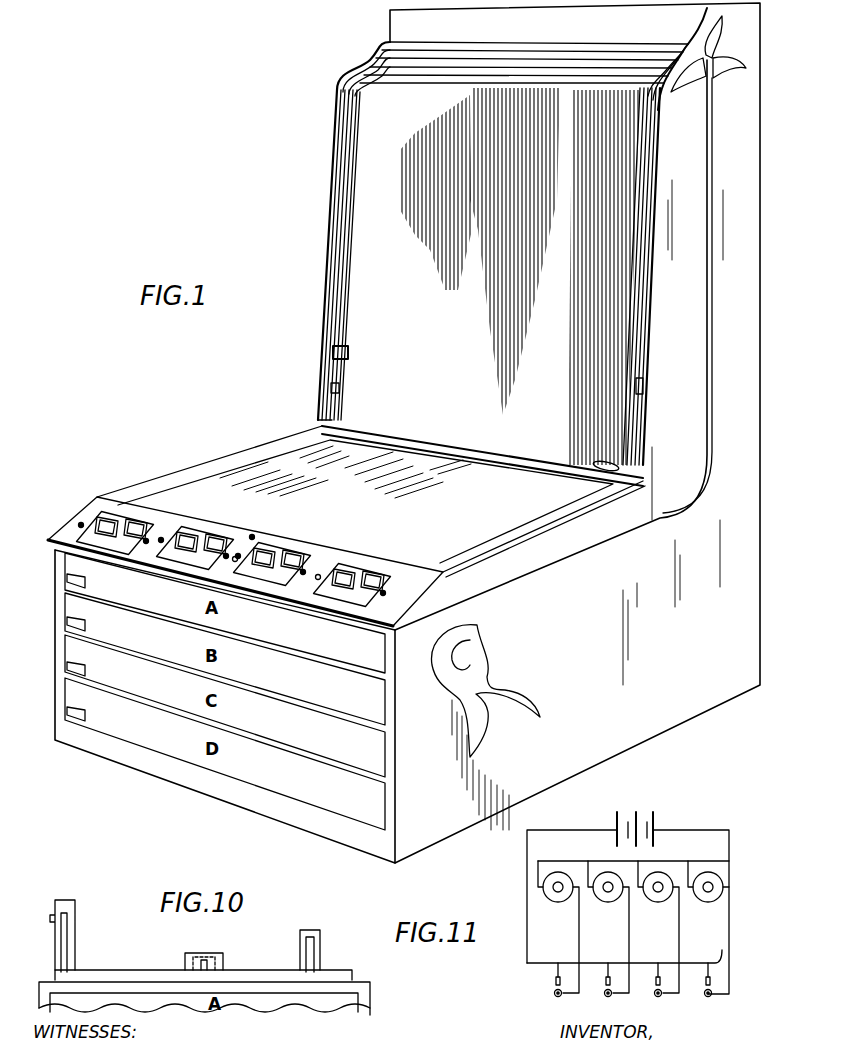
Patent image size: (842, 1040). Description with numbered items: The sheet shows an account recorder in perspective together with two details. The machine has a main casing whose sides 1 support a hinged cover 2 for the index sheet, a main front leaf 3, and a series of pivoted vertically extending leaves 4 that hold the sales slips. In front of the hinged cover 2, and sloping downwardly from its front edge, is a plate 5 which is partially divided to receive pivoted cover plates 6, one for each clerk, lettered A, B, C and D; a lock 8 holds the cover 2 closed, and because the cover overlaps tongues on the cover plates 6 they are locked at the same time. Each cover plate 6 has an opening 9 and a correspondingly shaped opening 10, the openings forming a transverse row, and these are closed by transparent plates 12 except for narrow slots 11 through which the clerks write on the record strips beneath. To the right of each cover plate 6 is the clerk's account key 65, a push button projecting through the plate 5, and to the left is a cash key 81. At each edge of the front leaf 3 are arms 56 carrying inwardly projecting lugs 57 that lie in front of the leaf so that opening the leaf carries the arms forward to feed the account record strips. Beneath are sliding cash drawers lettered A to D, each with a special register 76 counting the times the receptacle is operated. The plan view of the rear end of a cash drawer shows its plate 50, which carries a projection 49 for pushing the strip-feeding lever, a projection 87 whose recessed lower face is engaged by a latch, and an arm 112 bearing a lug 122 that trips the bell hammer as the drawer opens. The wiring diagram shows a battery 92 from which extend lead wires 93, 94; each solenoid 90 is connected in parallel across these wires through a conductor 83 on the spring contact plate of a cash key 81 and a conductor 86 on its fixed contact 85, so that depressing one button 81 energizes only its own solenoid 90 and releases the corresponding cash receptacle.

In FIG. 1, the sides of the main casing 1 is at (336, 147).
In FIG. 1, the hinged cover 2 is at (502, 520).
In FIG. 1, the main front leaf 3 is at (623, 338).
In FIG. 1, the pivoted vertically extending leaves 4 is at (528, 62).
In FIG. 1, the plate 5 is at (90, 512).
In FIG. 1, the pivoted cover plates 6 is at (130, 550).
In FIG. 1, the lock 8 is at (255, 537).
In FIG. 1, the opening 9 is at (107, 520).
In FIG. 1, the opening 10 is at (149, 537).
In FIG. 1, the slots 11 is at (330, 593).
In FIG. 1, the transparent plates 12 is at (137, 520).
In FIG. 1, the arms 56 is at (340, 388).
In FIG. 1, the inwardly projecting lugs 57 is at (348, 350).
In FIG. 1, the push button or key 65 is at (145, 543).
In FIG. 1, the special registers 76 is at (93, 711).
In FIG. 1, the cash keys 81 is at (78, 525).
In FIG. 11, the cash keys 81 is at (561, 996).
In FIG. 10, the projection 49 is at (320, 935).
In FIG. 10, the plate 50 is at (256, 970).
In FIG. 10, the projection 87 is at (195, 953).
In FIG. 10, the arm 112 is at (68, 930).
In FIG. 10, the lug 122 is at (52, 915).
In FIG. 11, the conductor 83 is at (579, 948).
In FIG. 11, the contact 85 is at (556, 981).
In FIG. 11, the conductor 86 is at (557, 971).
In FIG. 11, the solenoid 90 is at (719, 879).
In FIG. 11, the source of electrical energy 92 is at (643, 818).
In FIG. 11, the lead wire 93 is at (683, 856).
In FIG. 11, the lead wire 94 is at (608, 963).